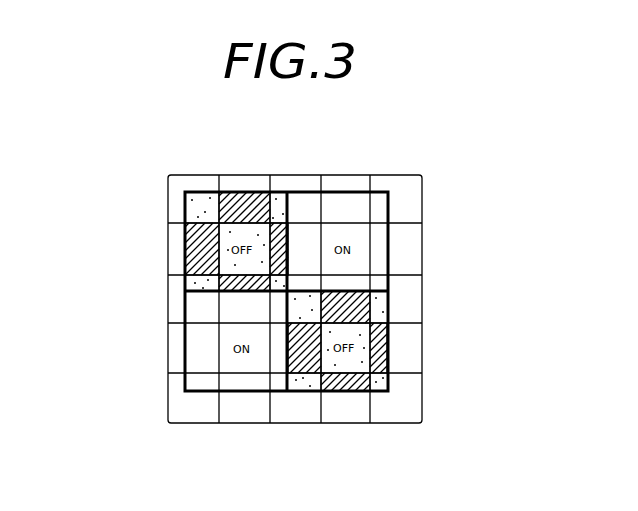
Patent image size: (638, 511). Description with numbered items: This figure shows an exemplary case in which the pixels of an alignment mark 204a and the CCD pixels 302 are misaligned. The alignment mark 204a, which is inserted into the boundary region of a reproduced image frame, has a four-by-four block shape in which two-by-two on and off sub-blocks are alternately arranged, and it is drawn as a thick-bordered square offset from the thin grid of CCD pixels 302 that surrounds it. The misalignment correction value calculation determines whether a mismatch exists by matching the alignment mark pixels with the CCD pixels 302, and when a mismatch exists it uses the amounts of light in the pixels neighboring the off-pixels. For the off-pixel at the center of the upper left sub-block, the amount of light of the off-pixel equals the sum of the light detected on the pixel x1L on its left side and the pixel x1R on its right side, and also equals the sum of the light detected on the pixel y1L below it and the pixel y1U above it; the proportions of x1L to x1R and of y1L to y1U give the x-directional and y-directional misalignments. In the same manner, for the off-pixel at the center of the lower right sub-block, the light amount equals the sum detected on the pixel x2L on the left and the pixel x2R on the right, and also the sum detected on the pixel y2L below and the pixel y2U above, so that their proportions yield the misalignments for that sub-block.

The CCD pixels 302 is at (414, 400).
The alignment mark 204a is at (390, 206).
The pixel y1U is at (240, 200).
The pixel x1L is at (187, 250).
The pixel x1R is at (290, 248).
The pixel y1L is at (240, 292).
The pixel y2U is at (346, 295).
The pixel x2L is at (295, 346).
The pixel x2R is at (388, 347).
The pixel y2L is at (348, 393).